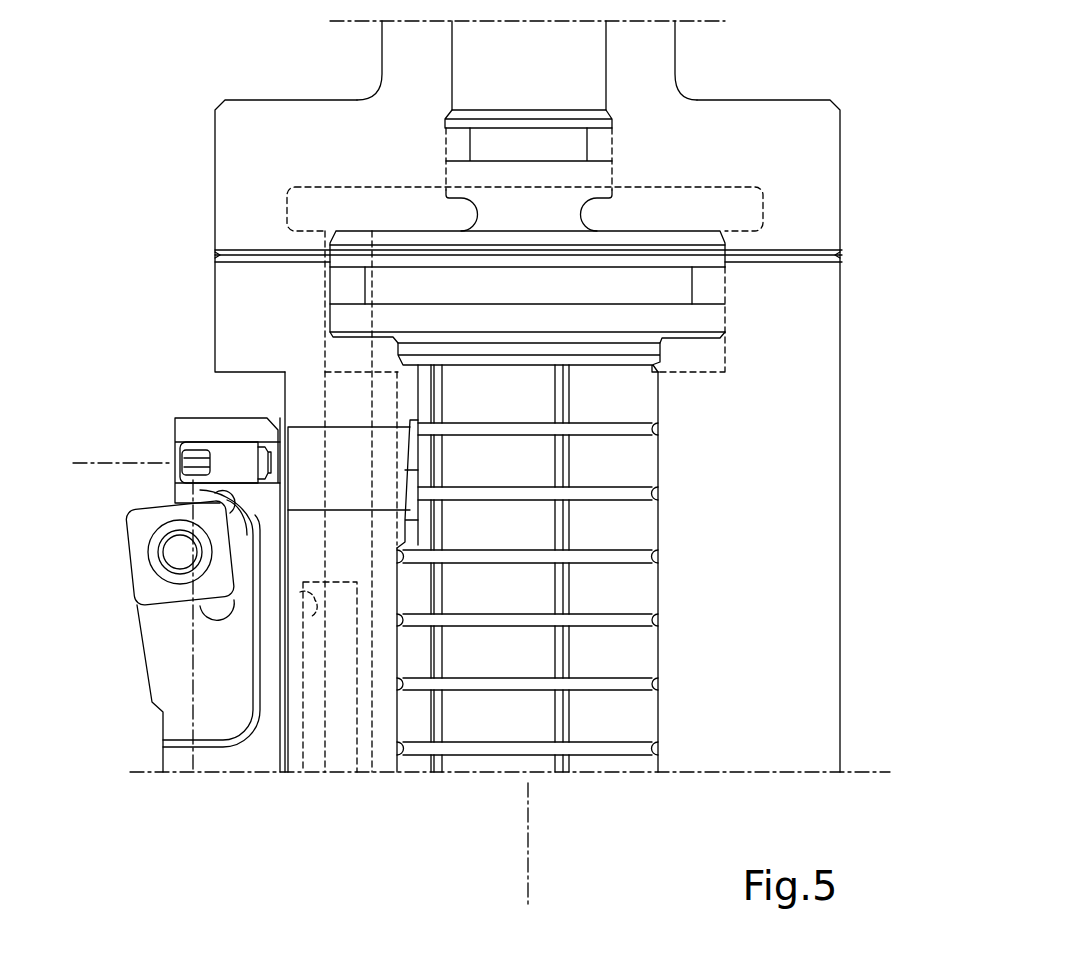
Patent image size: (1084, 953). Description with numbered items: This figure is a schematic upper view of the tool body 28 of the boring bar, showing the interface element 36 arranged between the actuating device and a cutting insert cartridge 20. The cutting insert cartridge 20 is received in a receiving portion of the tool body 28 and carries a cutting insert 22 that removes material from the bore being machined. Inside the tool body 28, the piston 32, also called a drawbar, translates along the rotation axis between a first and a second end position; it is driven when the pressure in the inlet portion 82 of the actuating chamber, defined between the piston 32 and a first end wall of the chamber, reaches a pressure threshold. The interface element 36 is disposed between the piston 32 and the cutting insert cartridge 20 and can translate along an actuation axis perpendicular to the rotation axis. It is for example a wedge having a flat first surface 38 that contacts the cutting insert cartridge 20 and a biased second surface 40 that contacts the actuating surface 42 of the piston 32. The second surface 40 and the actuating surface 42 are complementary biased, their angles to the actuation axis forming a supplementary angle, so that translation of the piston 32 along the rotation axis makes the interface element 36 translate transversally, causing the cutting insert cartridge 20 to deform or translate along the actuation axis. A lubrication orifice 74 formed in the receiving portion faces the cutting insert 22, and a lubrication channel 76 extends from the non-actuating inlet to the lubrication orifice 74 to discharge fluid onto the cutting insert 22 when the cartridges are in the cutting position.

The cutting insert cartridge 20 is at (167, 645).
The cutting insert 22 is at (142, 575).
The tool body 28 is at (841, 165).
The piston 32 is at (630, 525).
The interface element 36 is at (312, 450).
The first surface 38 is at (293, 465).
The second surface 40 is at (407, 432).
The actuating surface 42 is at (410, 470).
The lubrication orifice 74 is at (313, 605).
The lubrication channel 76 is at (303, 745).
The inlet portion 82 is at (700, 205).